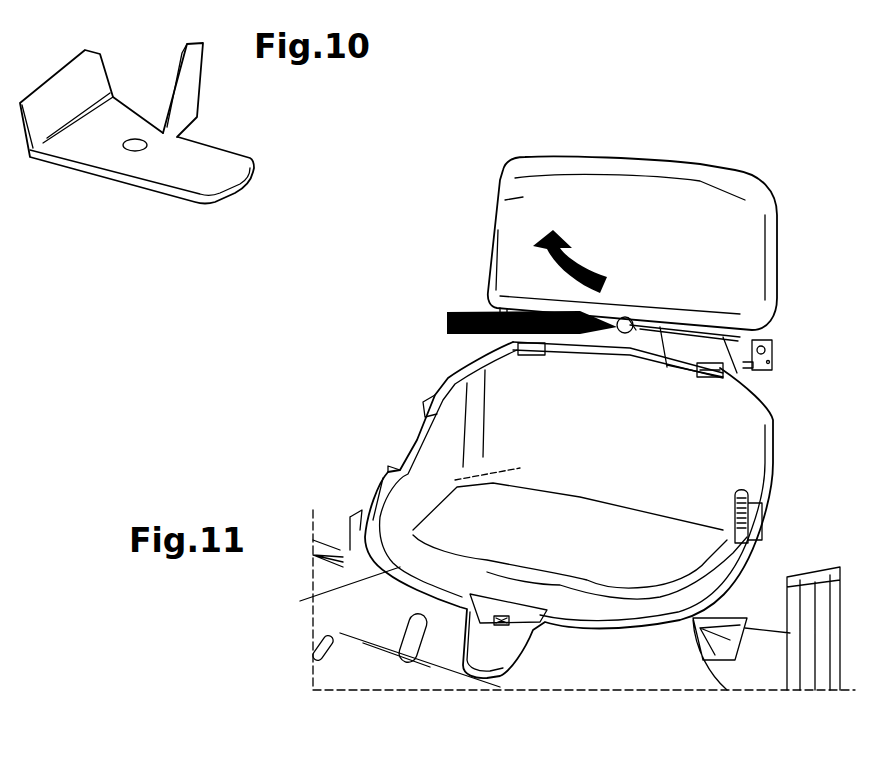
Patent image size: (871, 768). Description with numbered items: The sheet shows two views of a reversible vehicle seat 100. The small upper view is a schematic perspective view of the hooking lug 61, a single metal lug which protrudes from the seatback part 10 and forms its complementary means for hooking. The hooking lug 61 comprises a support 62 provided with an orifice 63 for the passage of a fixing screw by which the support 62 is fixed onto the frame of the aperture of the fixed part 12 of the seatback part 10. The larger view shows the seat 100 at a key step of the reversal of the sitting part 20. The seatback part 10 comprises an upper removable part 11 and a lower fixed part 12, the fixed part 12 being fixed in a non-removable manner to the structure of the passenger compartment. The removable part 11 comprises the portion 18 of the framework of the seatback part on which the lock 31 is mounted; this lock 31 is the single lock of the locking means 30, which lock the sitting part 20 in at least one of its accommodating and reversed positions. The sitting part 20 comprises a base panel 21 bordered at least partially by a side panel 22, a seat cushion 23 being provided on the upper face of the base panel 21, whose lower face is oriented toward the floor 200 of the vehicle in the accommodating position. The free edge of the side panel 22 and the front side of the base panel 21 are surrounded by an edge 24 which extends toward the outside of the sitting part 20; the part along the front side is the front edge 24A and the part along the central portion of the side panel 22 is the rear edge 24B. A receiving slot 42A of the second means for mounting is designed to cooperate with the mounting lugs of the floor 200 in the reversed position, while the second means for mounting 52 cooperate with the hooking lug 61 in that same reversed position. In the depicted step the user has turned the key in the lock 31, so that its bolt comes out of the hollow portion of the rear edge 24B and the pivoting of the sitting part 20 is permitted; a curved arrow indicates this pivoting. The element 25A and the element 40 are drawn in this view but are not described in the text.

In FIG. 11, the seatback part 10 is at (764, 182).
In FIG. 11, the upper removable part 11 is at (515, 197).
In FIG. 11, the lower fixed part 12 is at (775, 305).
In FIG. 11, the portion of the framework of the seatback part 18 is at (653, 333).
In FIG. 11, the sitting part 20 is at (770, 420).
In FIG. 11, the base panel 21 is at (533, 555).
In FIG. 11, the side panel 22 is at (505, 428).
In FIG. 11, the seat cushion 23 is at (653, 555).
In FIG. 11, the edge 24 is at (373, 520).
In FIG. 11, the front edge 24A is at (390, 577).
In FIG. 11, the rear edge 24B is at (708, 377).
In FIG. 11, the front housing 25A is at (507, 630).
In FIG. 11, the locking means 30 is at (620, 318).
In FIG. 11, the lock 31 is at (632, 318).
In FIG. 11, the hinge rod 40 is at (509, 339).
In FIG. 11, the receiving slot 42A is at (532, 356).
In FIG. 11, the second means for mounting 52 is at (500, 625).
In FIG. 10, the hooking lug 61 is at (190, 98).
In FIG. 10, the support 62 is at (100, 140).
In FIG. 10, the orifice 63 is at (135, 140).
In FIG. 11, the seat 100 is at (398, 307).
In FIG. 11, the floor 200 is at (653, 660).